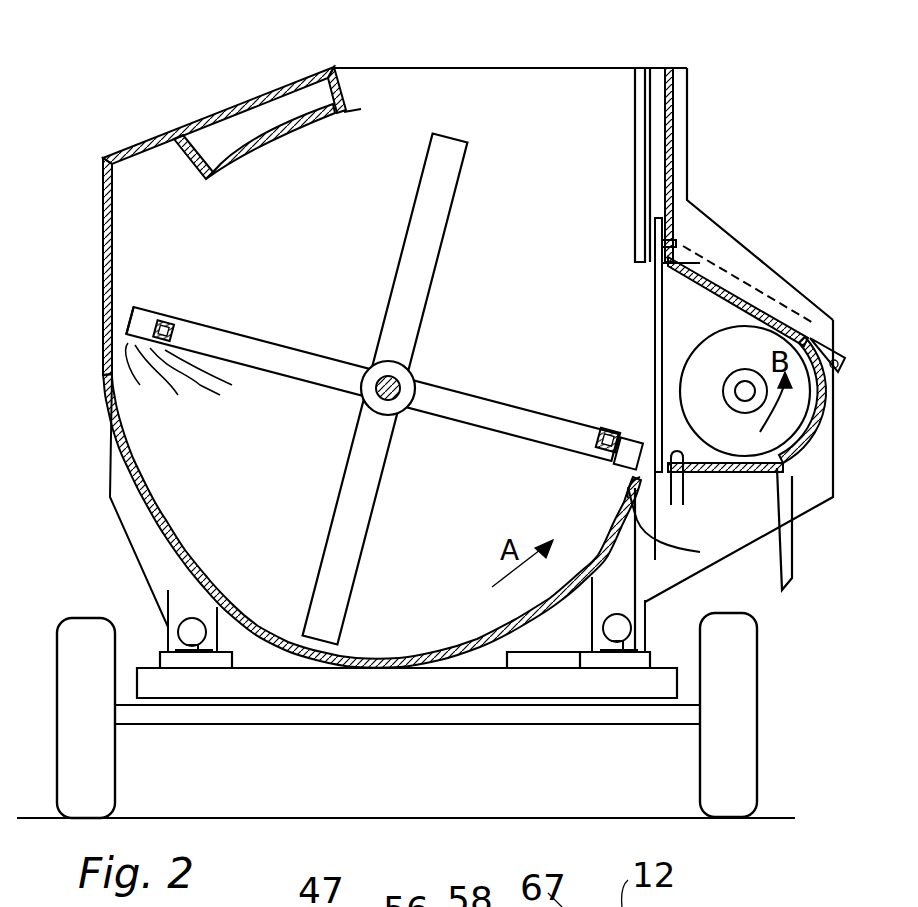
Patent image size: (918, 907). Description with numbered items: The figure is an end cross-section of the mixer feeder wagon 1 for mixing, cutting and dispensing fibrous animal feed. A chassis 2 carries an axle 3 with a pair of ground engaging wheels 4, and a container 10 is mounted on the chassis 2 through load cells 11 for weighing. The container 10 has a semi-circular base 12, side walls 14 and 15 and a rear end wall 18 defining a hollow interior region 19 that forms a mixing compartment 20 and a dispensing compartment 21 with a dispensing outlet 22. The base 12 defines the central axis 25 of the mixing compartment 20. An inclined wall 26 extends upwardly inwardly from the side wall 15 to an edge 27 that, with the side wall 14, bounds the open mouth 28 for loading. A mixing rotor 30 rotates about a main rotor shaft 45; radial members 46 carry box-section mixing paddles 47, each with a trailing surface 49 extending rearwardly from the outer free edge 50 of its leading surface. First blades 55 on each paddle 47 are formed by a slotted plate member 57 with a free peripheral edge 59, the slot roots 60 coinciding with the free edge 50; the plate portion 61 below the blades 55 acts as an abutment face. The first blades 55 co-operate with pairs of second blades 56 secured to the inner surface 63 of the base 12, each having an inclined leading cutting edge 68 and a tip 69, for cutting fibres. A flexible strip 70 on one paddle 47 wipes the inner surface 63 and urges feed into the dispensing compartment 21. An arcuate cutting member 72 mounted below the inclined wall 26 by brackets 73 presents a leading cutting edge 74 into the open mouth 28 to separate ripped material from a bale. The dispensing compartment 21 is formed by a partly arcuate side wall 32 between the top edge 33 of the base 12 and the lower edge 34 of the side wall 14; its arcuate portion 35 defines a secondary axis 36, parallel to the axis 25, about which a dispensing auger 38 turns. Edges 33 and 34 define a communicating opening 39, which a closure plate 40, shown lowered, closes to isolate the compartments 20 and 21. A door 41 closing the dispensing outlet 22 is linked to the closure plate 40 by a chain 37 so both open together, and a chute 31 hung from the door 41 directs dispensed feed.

The mixer feeder wagon 1 is at (88, 68).
The chassis 2 is at (492, 687).
The axle 3 is at (403, 717).
The ground engaging wheels 4 is at (108, 772).
The container 10 is at (108, 388).
The load cells 11 is at (173, 625).
The base 12 is at (253, 650).
The side wall 14 is at (672, 142).
The side wall 15 is at (110, 217).
The rear end wall 18 is at (590, 75).
The hollow interior region 19 is at (108, 288).
The mixing compartment 20 is at (172, 487).
The dispensing compartment 21 is at (750, 292).
The dispensing outlet 22 is at (778, 461).
The central axis 25 is at (408, 372).
The inclined wall 26 is at (135, 147).
The longitudinally extending edge 27 is at (333, 68).
The open mouth 28 is at (418, 70).
The mixing rotor 30 is at (440, 230).
The chute 31 is at (792, 567).
The partly arcuate side wall 32 is at (730, 470).
The top edge 33 is at (684, 527).
The lower edge 34 is at (656, 300).
The partly arcuate portion 35 is at (813, 330).
The secondary axis 36 is at (735, 391).
The chain 37 is at (740, 268).
The dispensing auger 38 is at (712, 353).
The communicating opening 39 is at (677, 505).
The closure plate 40 is at (665, 317).
The door 41 is at (845, 403).
The main rotor shaft 45 is at (398, 414).
The radial members 46 is at (437, 270).
The mixing paddles 47 is at (170, 325).
The trailing surface 49 is at (162, 320).
The outer free edge 50 is at (146, 320).
The first blades 55 is at (178, 400).
The second blades 56 is at (600, 625).
The plate member 57 is at (600, 432).
The free peripheral edge 59 is at (128, 336).
The root 60 is at (220, 398).
The portion 61 is at (210, 376).
The inner surface 63 is at (233, 607).
The leading cutting edge 68 is at (352, 637).
The tips 69 is at (563, 580).
The elongated strip 70 is at (637, 523).
The cutting member 72 is at (262, 148).
The brackets 73 is at (182, 157).
The leading cutting edge 74 is at (358, 112).